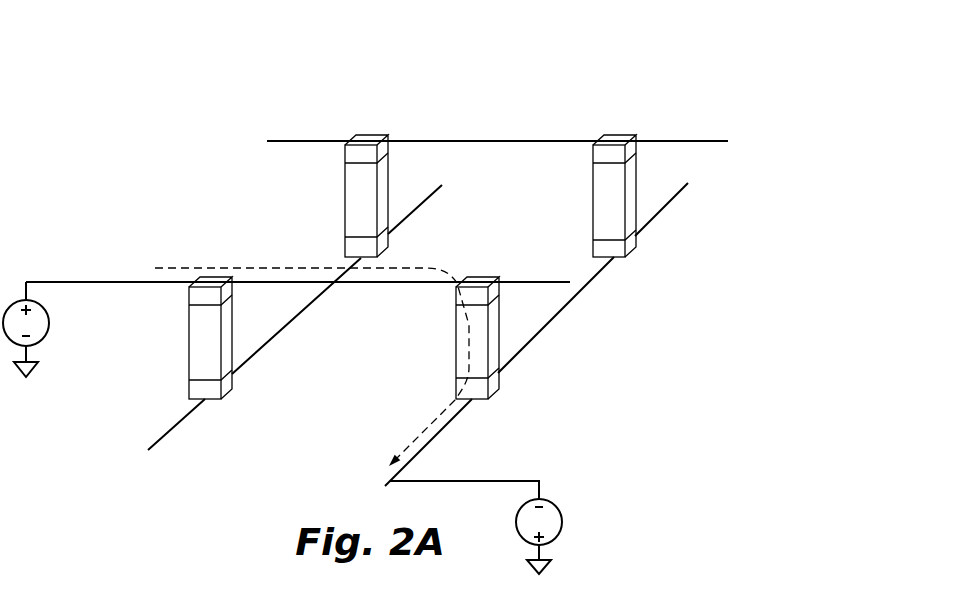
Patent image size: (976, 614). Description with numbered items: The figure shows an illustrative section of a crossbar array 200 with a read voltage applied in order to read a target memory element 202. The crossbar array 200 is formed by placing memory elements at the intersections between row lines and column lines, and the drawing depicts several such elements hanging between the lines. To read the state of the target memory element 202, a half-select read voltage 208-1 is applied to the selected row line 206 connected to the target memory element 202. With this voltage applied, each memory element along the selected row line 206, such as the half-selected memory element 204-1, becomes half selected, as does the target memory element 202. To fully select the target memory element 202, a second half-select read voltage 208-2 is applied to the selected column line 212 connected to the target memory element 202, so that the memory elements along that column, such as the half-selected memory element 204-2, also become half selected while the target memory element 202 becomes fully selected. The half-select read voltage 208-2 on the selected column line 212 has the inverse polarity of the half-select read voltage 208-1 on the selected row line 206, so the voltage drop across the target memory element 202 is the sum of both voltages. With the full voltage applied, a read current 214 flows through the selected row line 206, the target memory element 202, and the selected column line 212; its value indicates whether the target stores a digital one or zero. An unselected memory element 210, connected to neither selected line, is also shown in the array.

The crossbar array 200 is at (130, 143).
The target memory element 202 is at (457, 343).
The half-selected memory element 204-1 is at (218, 277).
The half-selected memory element 204-2 is at (620, 139).
The selected row line 206 is at (105, 282).
The half-select read voltage 208-1 is at (86, 382).
The half-select read voltage 208-2 is at (561, 500).
The unselected memory element 210 is at (373, 139).
The selected column line 212 is at (527, 343).
The read current 214 is at (433, 421).